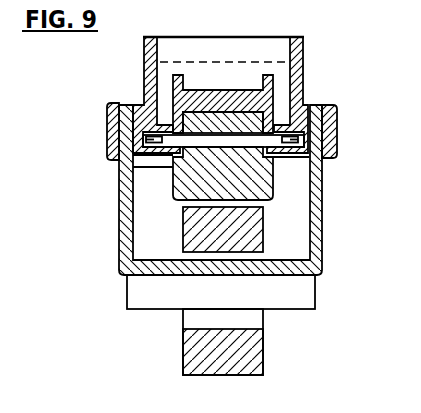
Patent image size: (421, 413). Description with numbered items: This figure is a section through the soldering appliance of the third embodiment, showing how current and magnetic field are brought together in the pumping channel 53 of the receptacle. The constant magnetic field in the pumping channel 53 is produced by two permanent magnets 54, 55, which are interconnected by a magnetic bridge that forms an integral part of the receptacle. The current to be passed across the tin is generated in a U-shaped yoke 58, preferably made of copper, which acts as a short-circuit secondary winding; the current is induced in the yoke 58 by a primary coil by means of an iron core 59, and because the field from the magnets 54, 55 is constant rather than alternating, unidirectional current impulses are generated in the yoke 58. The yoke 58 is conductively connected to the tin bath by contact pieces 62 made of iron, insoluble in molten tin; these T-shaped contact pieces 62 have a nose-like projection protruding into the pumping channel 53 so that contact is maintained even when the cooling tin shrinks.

The pumping channel 53 is at (245, 140).
The permanent magnet 54 is at (210, 127).
The permanent magnet 55 is at (197, 160).
The U-shaped yoke 58 is at (119, 212).
The iron core 59 is at (183, 358).
The contact pieces 62 is at (142, 105).